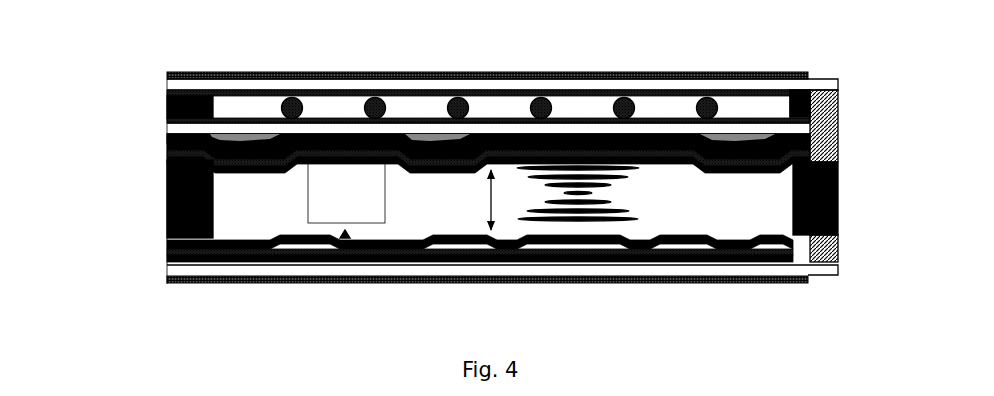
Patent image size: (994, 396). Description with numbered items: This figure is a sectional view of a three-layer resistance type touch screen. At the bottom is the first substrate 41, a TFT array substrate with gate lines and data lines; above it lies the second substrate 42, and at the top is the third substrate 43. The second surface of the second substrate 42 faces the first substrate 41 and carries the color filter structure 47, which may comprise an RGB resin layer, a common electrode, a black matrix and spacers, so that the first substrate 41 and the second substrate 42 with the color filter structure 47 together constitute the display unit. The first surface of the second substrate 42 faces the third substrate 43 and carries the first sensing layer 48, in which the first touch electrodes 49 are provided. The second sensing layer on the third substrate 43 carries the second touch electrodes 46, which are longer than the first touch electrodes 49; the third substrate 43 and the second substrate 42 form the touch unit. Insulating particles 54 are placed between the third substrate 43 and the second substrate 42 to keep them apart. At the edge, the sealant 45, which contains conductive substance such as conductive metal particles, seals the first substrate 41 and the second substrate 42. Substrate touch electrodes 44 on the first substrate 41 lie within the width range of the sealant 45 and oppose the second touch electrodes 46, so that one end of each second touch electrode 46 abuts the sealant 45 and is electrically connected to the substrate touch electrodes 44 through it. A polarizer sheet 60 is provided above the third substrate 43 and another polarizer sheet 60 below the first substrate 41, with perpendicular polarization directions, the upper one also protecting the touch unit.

The first substrate 41 is at (172, 270).
The second substrate 42 is at (183, 129).
The third substrate 43 is at (183, 85).
The substrate touch electrodes 44 is at (820, 250).
The sealant 45 is at (838, 187).
The second touch electrodes 46 is at (822, 138).
The color filter structure 47 is at (180, 154).
The first sensing layer 48 is at (168, 120).
The first touch electrodes 49 is at (808, 105).
The insulating particles 54 is at (304, 102).
The polarizer sheet 60 is at (165, 78).